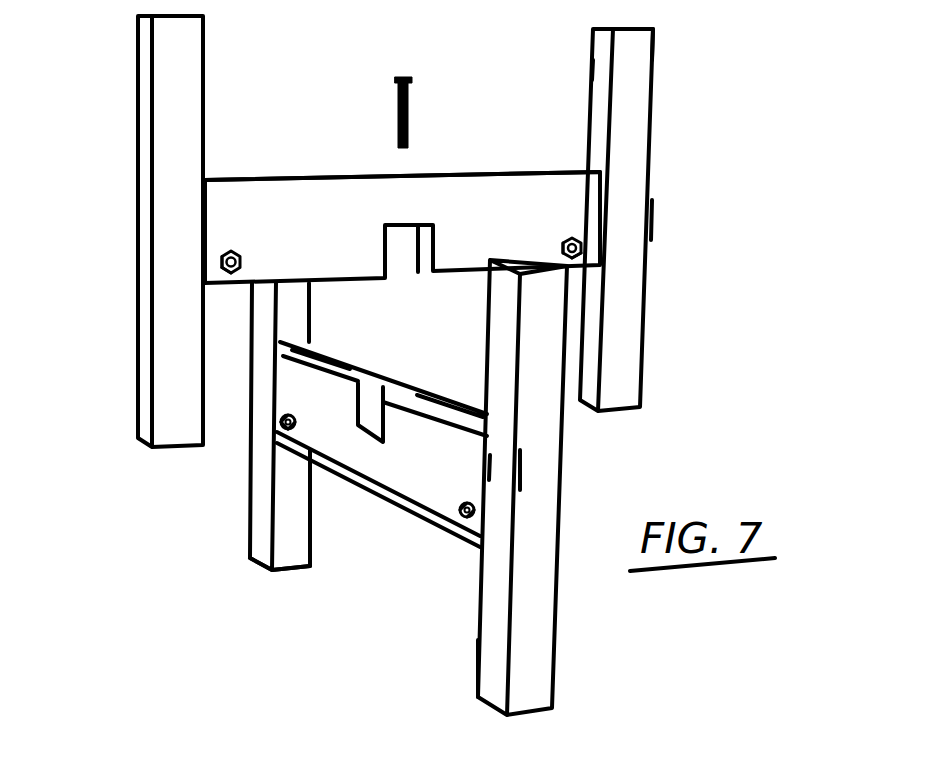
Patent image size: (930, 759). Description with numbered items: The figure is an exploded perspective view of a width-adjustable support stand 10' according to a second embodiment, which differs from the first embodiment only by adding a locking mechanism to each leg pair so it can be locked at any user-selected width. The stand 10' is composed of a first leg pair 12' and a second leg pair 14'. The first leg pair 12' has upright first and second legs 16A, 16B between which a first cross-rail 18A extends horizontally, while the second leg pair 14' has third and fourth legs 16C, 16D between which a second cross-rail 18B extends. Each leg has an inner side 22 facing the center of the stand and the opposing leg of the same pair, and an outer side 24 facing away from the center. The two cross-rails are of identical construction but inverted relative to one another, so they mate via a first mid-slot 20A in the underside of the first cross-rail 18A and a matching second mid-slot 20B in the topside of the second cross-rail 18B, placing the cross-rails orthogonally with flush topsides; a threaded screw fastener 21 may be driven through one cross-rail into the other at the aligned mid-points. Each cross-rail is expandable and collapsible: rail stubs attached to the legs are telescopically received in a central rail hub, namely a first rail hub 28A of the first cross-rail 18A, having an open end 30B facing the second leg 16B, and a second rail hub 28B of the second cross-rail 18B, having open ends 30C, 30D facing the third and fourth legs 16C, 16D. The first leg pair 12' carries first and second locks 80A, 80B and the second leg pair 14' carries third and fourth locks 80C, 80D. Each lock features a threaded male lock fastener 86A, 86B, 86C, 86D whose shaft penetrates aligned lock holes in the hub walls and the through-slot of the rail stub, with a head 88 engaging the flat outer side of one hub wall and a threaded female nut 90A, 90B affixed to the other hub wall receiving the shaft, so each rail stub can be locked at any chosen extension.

The width-adjustable support stand 10' is at (704, 221).
The first leg pair 12' is at (692, 42).
The second leg pair 14' is at (430, 668).
The first leg 16A is at (188, 147).
The second leg 16B is at (628, 122).
The third leg 16C is at (534, 555).
The fourth leg 16D is at (250, 530).
The first cross-rail 18A is at (500, 167).
The second cross-rail 18B is at (437, 385).
The first mid-slot 20A is at (407, 260).
The second mid-slot 20B is at (400, 380).
The threaded screw fastener 21 is at (420, 120).
The inner side 22 is at (597, 68).
The outer side 24 is at (150, 322).
The first rail hub 28A is at (333, 200).
The second rail hub 28B is at (417, 478).
The open end of first rail hub 30B is at (203, 210).
The open end of second rail hub 30C is at (485, 467).
The open end of second rail hub 30D is at (285, 428).
The first lock 80A is at (224, 247).
The second lock 80B is at (565, 246).
The third lock 80C is at (464, 501).
The fourth lock 80D is at (286, 417).
The male lock fastener 86A is at (232, 274).
The male lock fastener 86B is at (576, 246).
The male lock fastener 86C is at (461, 517).
The male lock fastener 86D is at (297, 421).
The head 88 is at (300, 428).
The female nut 90A is at (241, 257).
The female nut 90B is at (574, 243).